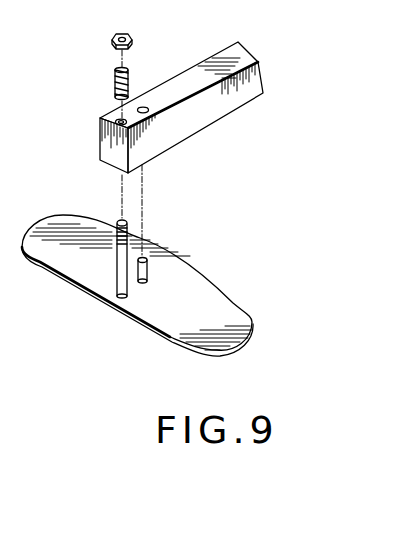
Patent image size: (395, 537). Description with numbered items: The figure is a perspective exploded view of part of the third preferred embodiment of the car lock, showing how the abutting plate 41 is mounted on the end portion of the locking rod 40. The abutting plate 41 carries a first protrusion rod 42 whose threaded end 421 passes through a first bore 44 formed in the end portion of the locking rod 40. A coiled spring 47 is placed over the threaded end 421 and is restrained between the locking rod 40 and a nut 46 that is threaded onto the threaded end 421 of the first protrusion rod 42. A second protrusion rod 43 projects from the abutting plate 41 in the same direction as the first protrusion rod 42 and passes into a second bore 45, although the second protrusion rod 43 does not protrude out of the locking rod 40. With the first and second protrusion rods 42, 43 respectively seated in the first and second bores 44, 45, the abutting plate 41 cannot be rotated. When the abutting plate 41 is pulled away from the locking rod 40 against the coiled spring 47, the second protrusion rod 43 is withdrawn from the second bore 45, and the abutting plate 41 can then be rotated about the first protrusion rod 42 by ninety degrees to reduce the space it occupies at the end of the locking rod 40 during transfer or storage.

The locking rod 40 is at (215, 117).
The abutting plate 41 is at (160, 338).
The first protrusion rod 42 is at (83, 241).
The threaded end 421 is at (115, 220).
The second protrusion rod 43 is at (141, 284).
The first bore 44 is at (115, 122).
The second bore 45 is at (143, 107).
The nut 46 is at (113, 37).
The coiled spring 47 is at (114, 80).